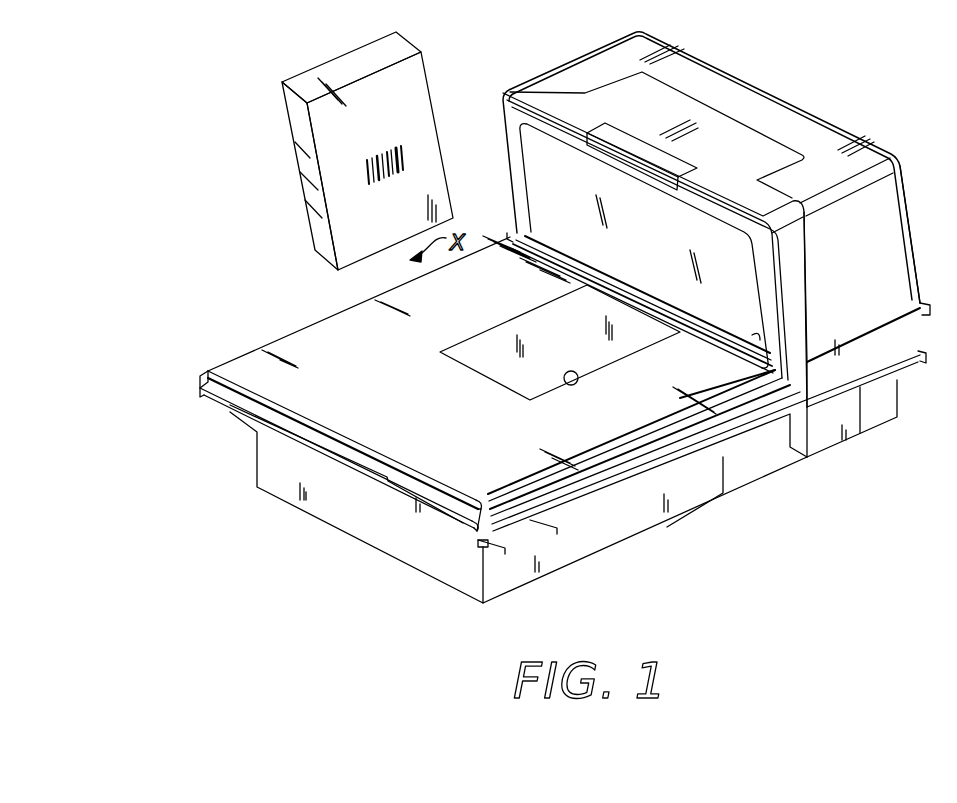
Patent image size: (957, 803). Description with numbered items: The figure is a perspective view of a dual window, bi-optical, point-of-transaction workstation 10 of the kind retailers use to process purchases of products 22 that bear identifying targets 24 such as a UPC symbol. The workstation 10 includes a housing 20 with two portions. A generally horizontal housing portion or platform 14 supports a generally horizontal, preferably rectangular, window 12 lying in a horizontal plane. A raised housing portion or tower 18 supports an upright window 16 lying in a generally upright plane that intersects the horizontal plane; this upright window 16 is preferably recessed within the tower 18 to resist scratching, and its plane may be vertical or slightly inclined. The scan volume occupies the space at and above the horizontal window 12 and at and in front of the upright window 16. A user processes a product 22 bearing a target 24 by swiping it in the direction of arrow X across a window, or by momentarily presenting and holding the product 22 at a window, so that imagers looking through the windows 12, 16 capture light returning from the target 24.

The point-of-transaction workstation 10 is at (764, 494).
The horizontal window 12 is at (572, 385).
The platform 14 is at (533, 490).
The upright window 16 is at (780, 357).
The tower 18 is at (860, 312).
The housing 20 is at (844, 131).
The product 22 is at (417, 86).
The target 24 is at (405, 150).